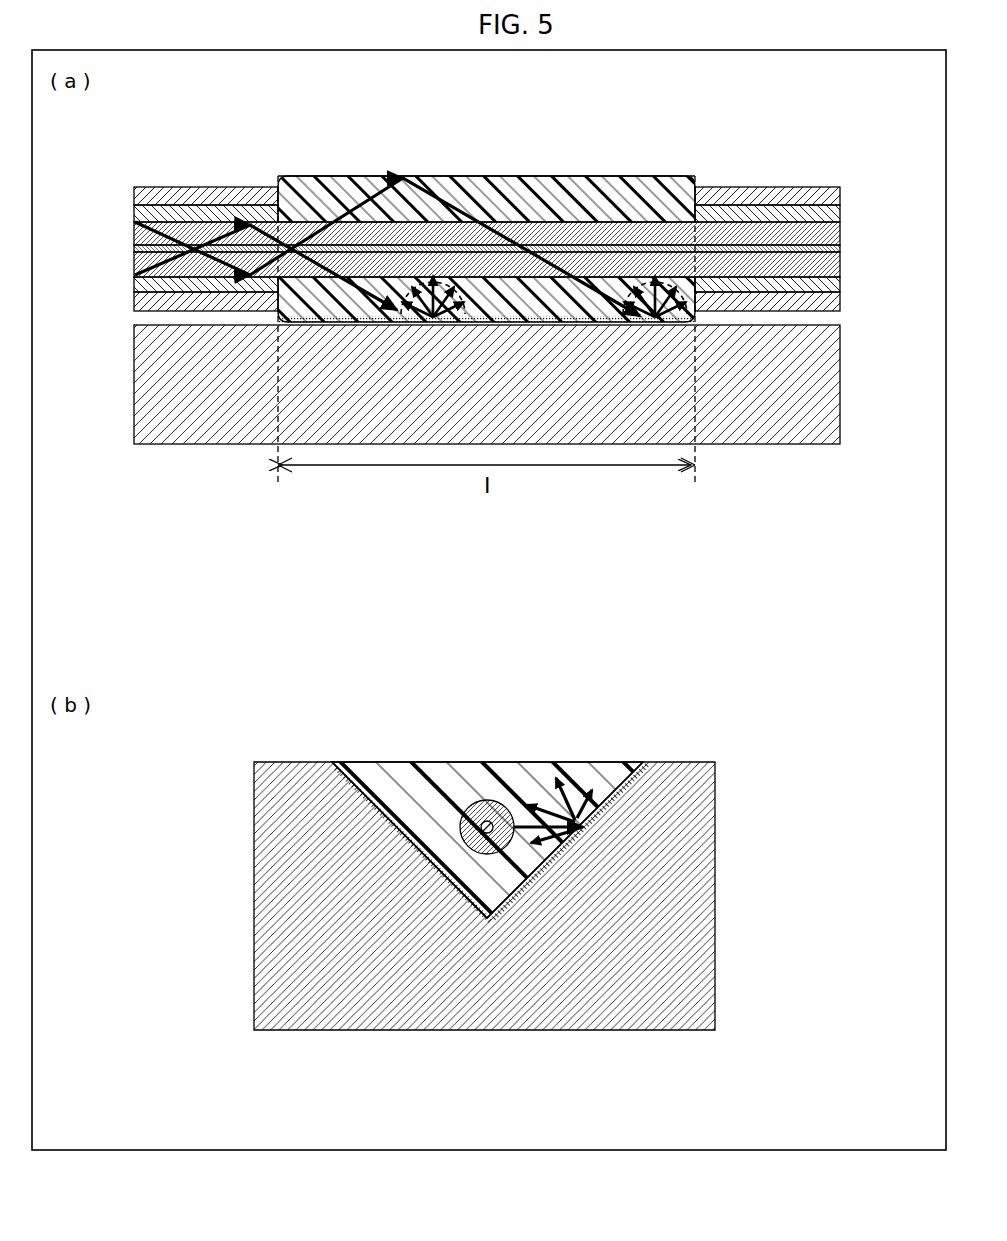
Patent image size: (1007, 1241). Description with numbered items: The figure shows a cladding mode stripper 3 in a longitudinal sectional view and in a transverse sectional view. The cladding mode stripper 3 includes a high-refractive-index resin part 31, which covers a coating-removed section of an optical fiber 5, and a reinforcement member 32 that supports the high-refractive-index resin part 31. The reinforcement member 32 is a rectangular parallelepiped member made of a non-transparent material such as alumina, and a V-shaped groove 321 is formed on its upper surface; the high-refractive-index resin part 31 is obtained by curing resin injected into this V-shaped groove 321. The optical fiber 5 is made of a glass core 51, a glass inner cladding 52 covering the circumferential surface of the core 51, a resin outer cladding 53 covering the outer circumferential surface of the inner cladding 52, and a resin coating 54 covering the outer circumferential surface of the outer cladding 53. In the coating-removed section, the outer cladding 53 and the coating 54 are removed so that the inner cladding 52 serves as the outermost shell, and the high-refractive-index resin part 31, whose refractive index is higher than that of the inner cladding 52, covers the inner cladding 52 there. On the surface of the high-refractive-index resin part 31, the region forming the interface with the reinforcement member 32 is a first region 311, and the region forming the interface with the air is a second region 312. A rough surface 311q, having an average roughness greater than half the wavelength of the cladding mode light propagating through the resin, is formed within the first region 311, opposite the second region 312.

The cladding mode stripper 3 is at (870, 134).
The optical fiber 5 is at (840, 250).
The high-refractive-index resin part 31 is at (566, 176).
The reinforcement member 32 is at (840, 392).
The first region 311 is at (486, 303).
The rough surface 311q is at (330, 318).
The second region 312 is at (522, 178).
The V-shaped groove 321 is at (343, 772).
The core 51 is at (680, 222).
The inner cladding 52 is at (722, 222).
The outer cladding 53 is at (765, 205).
The coating 54 is at (810, 190).